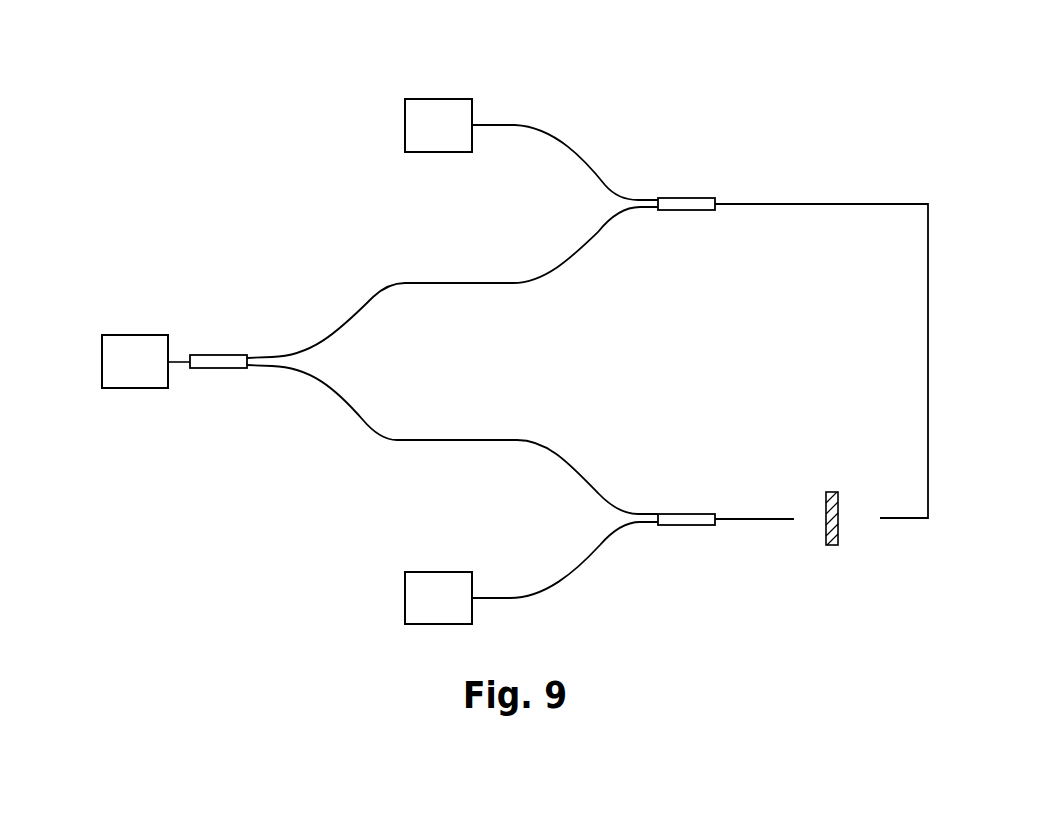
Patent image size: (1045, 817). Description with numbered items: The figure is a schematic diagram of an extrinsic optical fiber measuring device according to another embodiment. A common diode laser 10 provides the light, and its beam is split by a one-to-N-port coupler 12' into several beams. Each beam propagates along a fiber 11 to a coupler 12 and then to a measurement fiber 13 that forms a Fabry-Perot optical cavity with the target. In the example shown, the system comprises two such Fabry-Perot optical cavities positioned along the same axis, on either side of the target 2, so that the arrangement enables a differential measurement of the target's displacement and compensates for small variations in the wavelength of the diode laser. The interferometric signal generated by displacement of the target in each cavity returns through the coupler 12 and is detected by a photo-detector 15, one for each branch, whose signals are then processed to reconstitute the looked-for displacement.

The diode laser 10 is at (141, 358).
The 1*N-port coupler 12' is at (221, 315).
The fiber 11 is at (443, 283).
The coupler 12 is at (693, 367).
The measurement fiber 13 is at (820, 204).
The photo-detector 15 is at (442, 110).
The target 2 is at (853, 538).